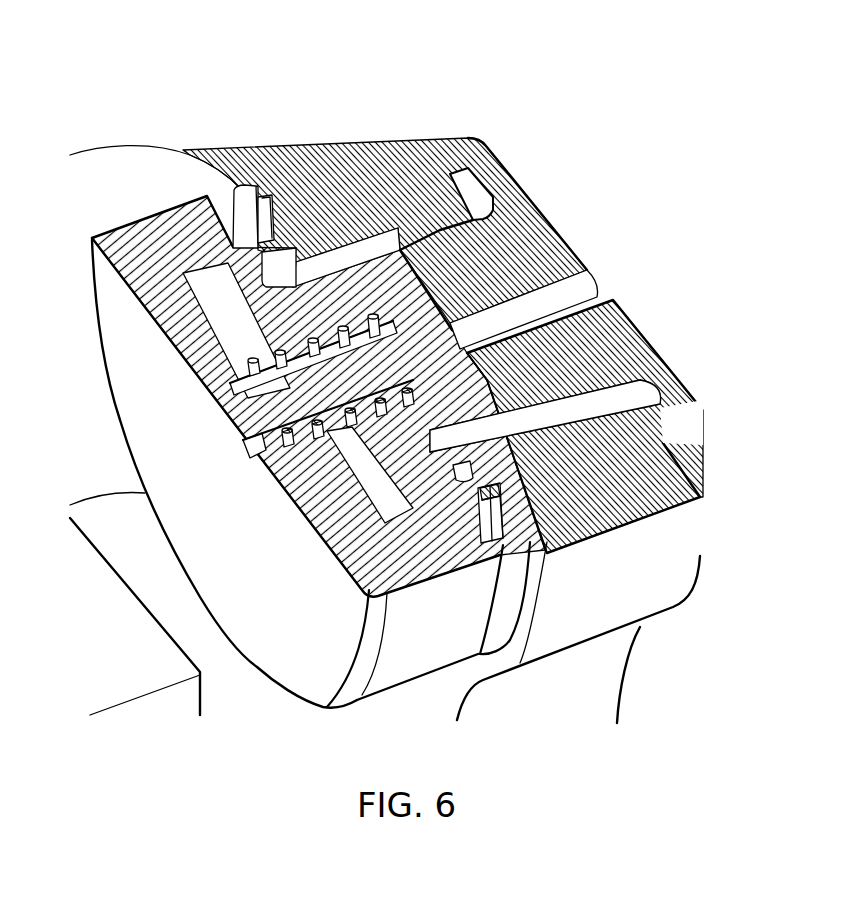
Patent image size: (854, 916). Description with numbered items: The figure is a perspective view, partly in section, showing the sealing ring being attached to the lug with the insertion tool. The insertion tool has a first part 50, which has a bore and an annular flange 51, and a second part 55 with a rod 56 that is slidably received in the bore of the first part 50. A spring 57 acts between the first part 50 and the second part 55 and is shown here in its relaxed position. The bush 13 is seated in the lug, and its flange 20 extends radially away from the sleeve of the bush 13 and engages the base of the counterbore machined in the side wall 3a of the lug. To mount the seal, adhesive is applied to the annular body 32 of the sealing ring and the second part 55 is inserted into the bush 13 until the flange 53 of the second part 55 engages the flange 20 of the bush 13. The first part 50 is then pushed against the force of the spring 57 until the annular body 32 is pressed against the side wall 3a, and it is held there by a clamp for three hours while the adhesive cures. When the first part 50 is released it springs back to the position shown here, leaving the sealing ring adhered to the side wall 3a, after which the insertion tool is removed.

The first part 50 is at (182, 220).
The flange 53 is at (265, 228).
The bush 13 is at (320, 248).
The second part 55 is at (397, 250).
The rod 56 is at (347, 333).
The spring 57 is at (417, 430).
The flange 20 is at (470, 465).
The annular body 32 is at (527, 510).
The annular flange 51 is at (500, 532).
The side wall 3a is at (537, 553).